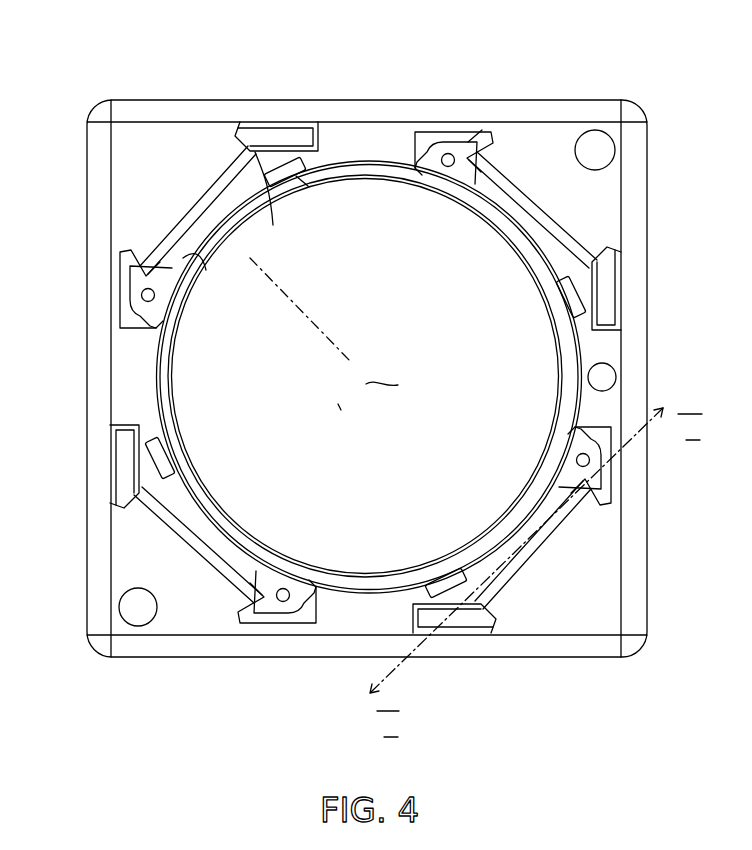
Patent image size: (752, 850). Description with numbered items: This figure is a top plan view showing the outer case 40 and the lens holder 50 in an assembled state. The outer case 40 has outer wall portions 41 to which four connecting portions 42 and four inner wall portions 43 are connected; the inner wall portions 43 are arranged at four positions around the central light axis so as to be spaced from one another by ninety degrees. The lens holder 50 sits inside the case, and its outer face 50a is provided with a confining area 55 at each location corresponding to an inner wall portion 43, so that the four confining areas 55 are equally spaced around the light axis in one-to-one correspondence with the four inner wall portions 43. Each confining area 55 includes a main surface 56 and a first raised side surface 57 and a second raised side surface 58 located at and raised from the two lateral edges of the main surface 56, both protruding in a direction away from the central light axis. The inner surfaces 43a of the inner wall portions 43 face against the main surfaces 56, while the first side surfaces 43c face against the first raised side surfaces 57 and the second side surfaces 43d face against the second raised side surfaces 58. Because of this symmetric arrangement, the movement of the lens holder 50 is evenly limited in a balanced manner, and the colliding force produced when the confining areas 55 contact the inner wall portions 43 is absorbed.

The outer case 40 is at (405, 86).
The outer wall portions 41 is at (652, 186).
The connecting portions 42 is at (170, 148).
The inner wall portions 43 is at (212, 163).
The inner surfaces 43a is at (190, 252).
The first side surfaces 43c is at (118, 283).
The second side surfaces 43d is at (264, 138).
The lens holder 50 is at (450, 296).
The outer face 50a is at (476, 136).
The confining areas 55 is at (252, 247).
The main surface 56 is at (262, 196).
The first raised side surface 57 is at (186, 270).
The second raised side surface 58 is at (303, 182).